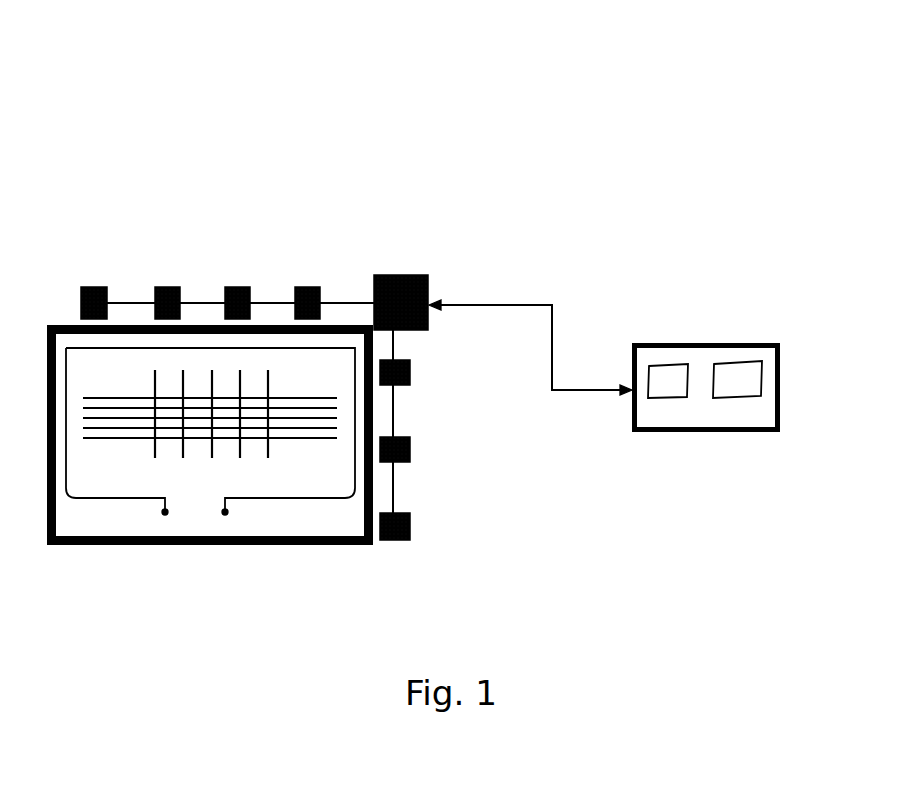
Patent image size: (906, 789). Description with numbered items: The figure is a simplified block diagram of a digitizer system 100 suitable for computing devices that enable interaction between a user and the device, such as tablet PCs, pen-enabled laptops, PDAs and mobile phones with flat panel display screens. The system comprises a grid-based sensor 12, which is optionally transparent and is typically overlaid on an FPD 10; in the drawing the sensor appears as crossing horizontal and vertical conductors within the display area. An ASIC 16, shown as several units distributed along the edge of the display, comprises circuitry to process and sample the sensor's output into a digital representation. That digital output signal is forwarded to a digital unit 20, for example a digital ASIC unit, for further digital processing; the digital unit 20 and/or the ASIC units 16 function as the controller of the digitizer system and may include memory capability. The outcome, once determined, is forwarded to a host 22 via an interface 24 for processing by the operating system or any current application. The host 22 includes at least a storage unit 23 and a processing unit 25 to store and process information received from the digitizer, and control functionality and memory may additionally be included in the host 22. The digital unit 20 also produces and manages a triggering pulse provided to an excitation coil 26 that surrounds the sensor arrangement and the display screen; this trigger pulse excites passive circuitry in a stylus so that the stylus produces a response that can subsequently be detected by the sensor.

The sensor arrangement 100 is at (277, 255).
The FPD 10 is at (53, 327).
The grid-based sensor 12 is at (268, 382).
The ASIC 16 is at (94, 287).
The digital unit 20 is at (410, 275).
The host 22 is at (687, 418).
The storage unit 23 is at (663, 367).
The interface 24 is at (552, 365).
The processing unit 25 is at (745, 368).
The excitation coil 26 is at (262, 500).